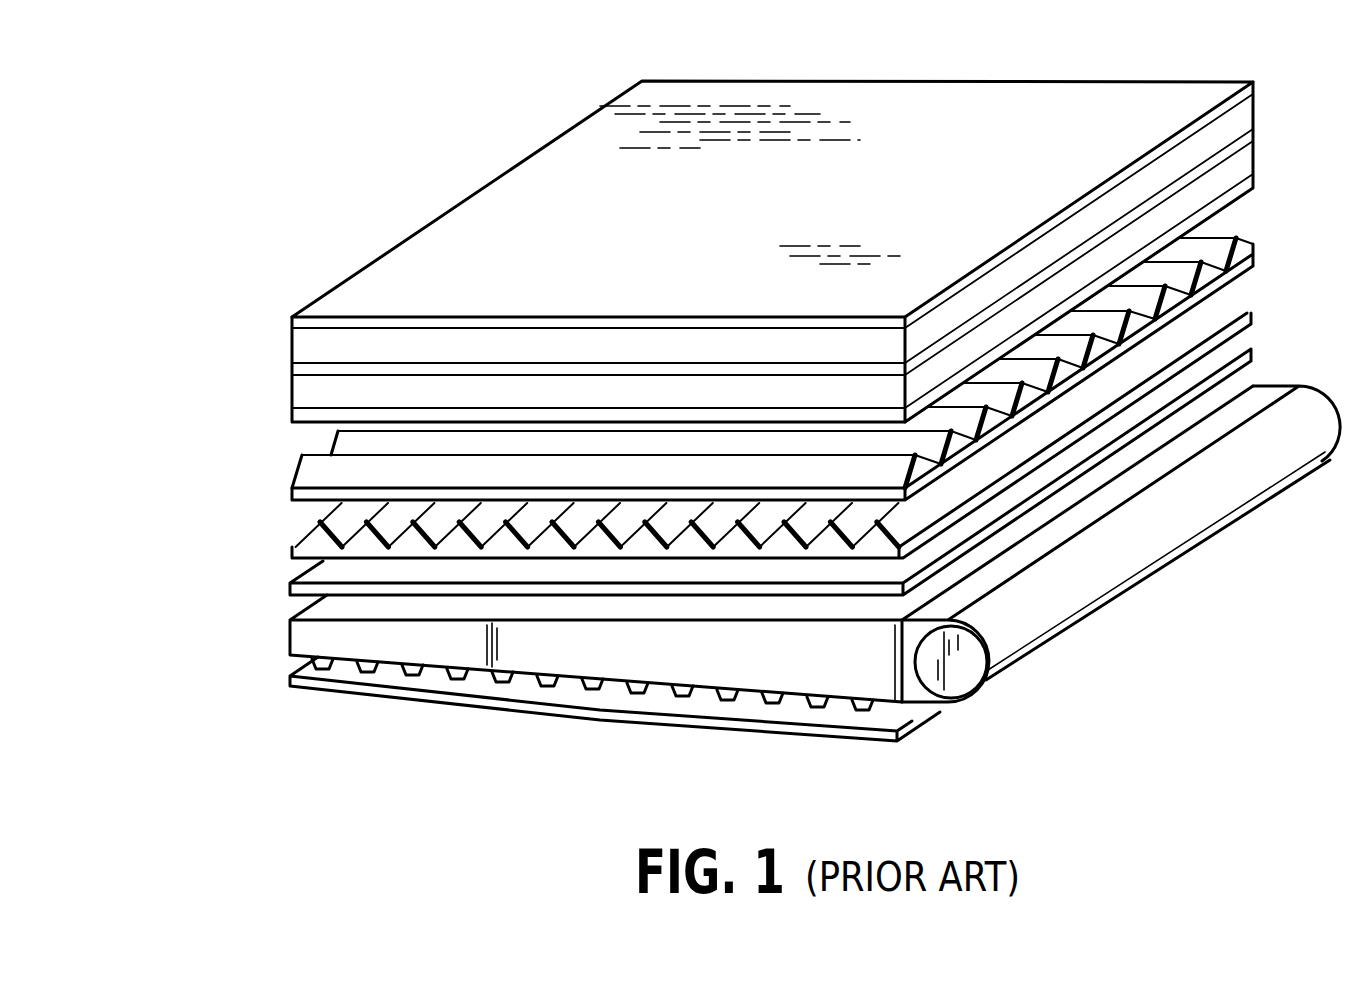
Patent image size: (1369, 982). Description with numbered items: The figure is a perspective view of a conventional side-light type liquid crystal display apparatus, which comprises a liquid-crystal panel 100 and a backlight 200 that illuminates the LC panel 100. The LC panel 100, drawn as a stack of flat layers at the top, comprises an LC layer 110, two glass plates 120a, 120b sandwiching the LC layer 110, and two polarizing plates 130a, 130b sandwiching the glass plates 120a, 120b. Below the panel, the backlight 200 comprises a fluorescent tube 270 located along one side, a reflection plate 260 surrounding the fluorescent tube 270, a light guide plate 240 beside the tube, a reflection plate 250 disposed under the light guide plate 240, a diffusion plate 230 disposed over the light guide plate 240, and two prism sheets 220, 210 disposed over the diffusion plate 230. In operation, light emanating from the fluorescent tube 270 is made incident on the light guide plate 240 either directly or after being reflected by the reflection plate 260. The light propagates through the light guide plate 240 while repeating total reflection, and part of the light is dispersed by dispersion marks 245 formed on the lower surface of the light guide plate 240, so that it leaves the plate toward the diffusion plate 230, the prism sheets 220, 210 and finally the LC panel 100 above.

The liquid-crystal panel 100 is at (667, 266).
The polarizing plate 130a is at (292, 321).
The glass plate 120a is at (292, 345).
The LC layer 110 is at (292, 370).
The glass plate 120b is at (296, 401).
The polarizing plate 130b is at (162, 223).
The backlight 200 is at (707, 506).
The prism sheet 210 is at (288, 489).
The prism sheet 220 is at (288, 557).
The diffusion plate 230 is at (288, 592).
The light guide plate 240 is at (288, 642).
The dispersion marks 245 is at (373, 660).
The reflection plate 250 is at (288, 687).
The reflection plate 260 is at (1085, 622).
The fluorescent tube 270 is at (962, 700).